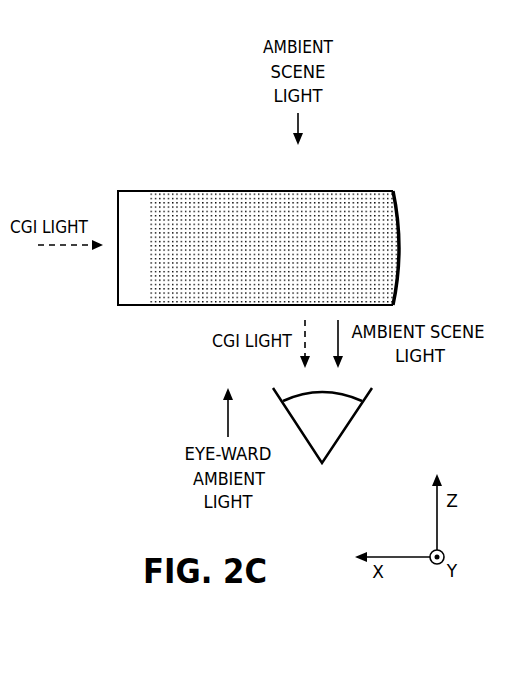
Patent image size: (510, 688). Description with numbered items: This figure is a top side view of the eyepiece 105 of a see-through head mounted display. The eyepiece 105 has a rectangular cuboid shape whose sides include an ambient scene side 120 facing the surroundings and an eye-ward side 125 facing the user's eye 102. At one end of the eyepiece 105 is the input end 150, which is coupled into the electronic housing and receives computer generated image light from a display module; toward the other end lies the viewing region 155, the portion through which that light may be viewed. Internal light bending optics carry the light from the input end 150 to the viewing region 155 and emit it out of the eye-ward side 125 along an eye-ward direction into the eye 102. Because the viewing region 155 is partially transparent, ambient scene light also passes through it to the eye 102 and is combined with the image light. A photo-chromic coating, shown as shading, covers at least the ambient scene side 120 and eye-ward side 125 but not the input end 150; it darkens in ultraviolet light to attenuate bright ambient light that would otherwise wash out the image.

The eyepiece 105 is at (276, 251).
The ambient scene side 120 is at (218, 178).
The eye-ward side 125 is at (192, 314).
The input end 150 is at (157, 177).
The viewing region 155 is at (262, 187).
The eye 102 is at (309, 425).